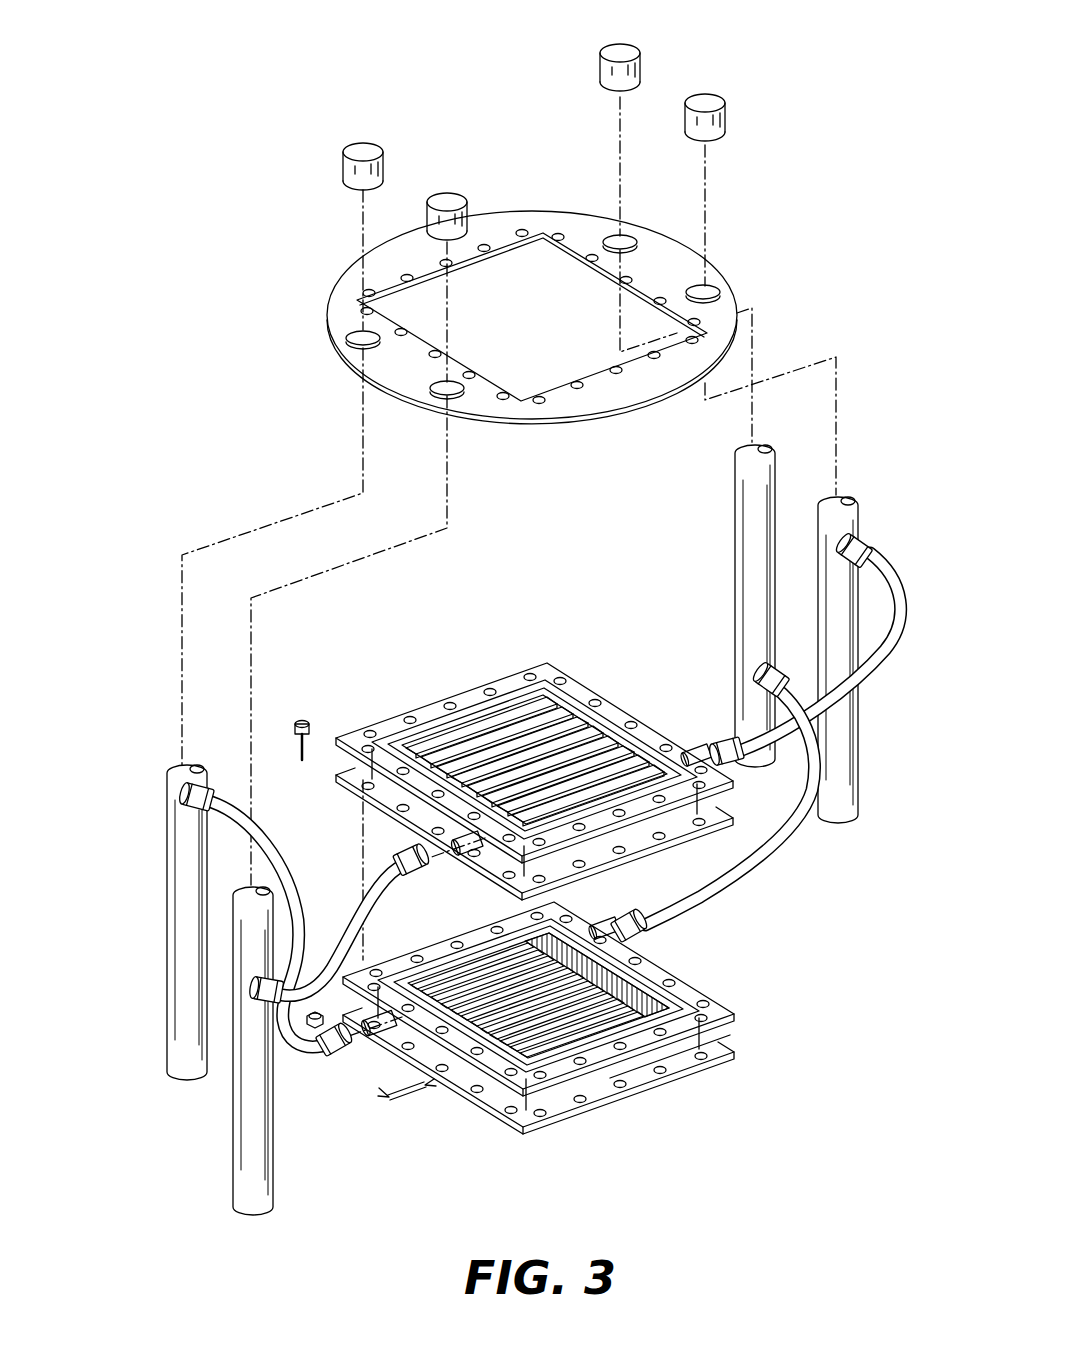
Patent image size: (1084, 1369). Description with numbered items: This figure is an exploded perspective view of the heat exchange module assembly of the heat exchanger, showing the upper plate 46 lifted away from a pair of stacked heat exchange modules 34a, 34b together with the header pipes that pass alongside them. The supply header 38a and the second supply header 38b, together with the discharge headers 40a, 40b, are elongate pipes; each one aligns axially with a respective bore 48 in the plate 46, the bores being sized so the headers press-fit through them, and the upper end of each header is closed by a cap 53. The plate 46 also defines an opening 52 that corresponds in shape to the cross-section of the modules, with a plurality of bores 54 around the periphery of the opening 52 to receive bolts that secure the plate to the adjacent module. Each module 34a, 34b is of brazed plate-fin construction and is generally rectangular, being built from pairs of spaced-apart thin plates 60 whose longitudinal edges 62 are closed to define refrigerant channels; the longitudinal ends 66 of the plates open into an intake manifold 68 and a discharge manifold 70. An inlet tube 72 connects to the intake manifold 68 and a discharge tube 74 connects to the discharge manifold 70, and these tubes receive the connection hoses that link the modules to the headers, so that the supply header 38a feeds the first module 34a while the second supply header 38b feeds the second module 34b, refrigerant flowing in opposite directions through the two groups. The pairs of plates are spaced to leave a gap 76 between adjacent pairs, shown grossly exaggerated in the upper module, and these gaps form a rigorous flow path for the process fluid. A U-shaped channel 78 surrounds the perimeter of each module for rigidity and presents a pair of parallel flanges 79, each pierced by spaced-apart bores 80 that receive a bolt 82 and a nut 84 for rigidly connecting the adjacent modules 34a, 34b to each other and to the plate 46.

The heat exchange module of the first group 34a is at (532, 746).
The heat exchange module of the second group 34b is at (517, 1050).
The supply header 38a is at (250, 1182).
The second supply header 38b is at (760, 523).
The discharge header 40a is at (840, 762).
The discharge header 40b is at (178, 930).
The upper plate 46 is at (720, 302).
The bore 48 is at (690, 290).
The opening 52 is at (515, 270).
The cap 53 is at (622, 47).
The bore 54 is at (583, 394).
The thin plate 60 is at (628, 755).
The longitudinal edge 62 is at (565, 745).
The longitudinal end 66 is at (400, 737).
The intake manifold 68 is at (435, 745).
The discharge manifold 70 is at (655, 735).
The inlet tube 72 is at (458, 838).
The discharge tube 74 is at (695, 752).
The gap 76 is at (395, 1090).
The U-shaped channel 78 is at (550, 1098).
The flange 79 is at (603, 1078).
The bore 80 is at (665, 1048).
The bolt 82 is at (300, 720).
The nut 84 is at (305, 1035).